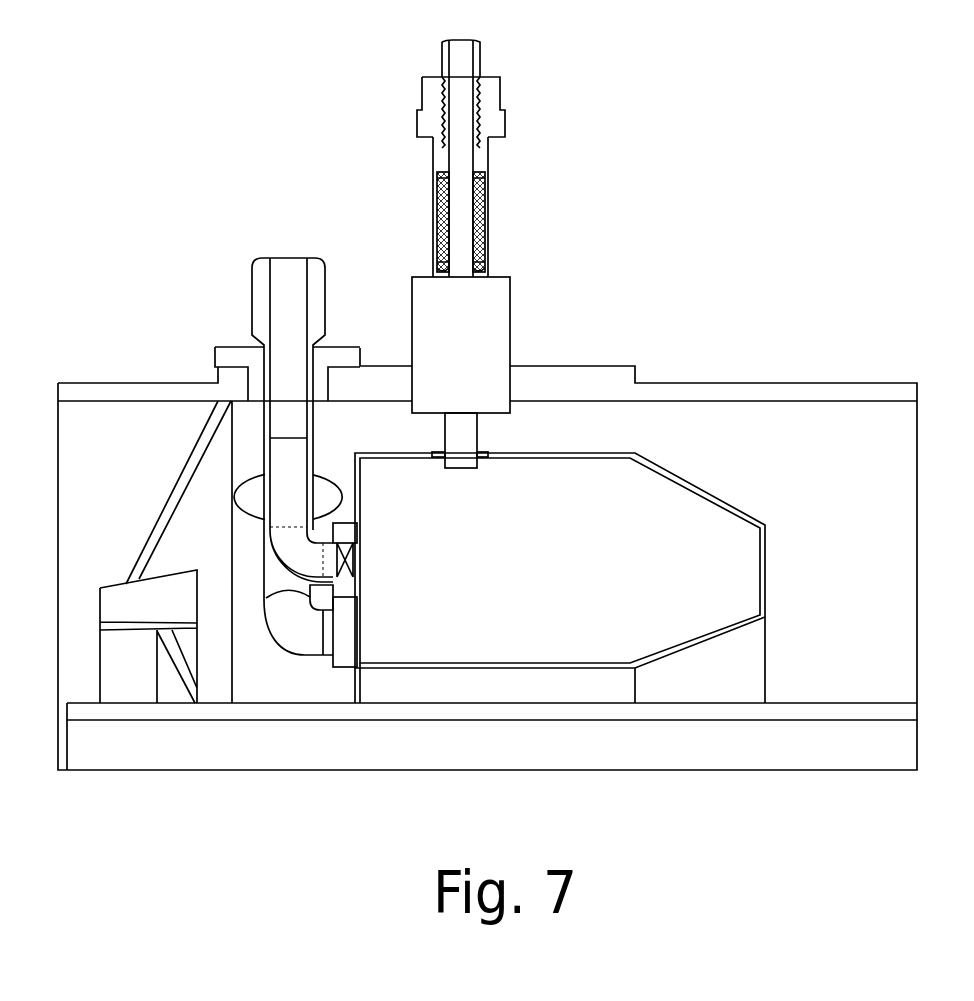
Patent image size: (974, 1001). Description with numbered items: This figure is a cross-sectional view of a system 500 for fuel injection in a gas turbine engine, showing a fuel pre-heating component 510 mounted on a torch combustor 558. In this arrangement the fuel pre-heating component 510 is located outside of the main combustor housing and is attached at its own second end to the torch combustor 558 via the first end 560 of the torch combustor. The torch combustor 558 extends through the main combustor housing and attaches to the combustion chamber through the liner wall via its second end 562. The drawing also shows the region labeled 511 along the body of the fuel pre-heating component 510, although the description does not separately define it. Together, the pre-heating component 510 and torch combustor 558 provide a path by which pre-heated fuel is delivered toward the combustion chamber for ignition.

The system for fuel injection 500 is at (207, 147).
The fuel pre-heating component 510 is at (480, 68).
The sleeve 511 is at (435, 210).
The first end 560 is at (498, 277).
The torch combustor 558 is at (510, 335).
The second end 562 is at (477, 430).